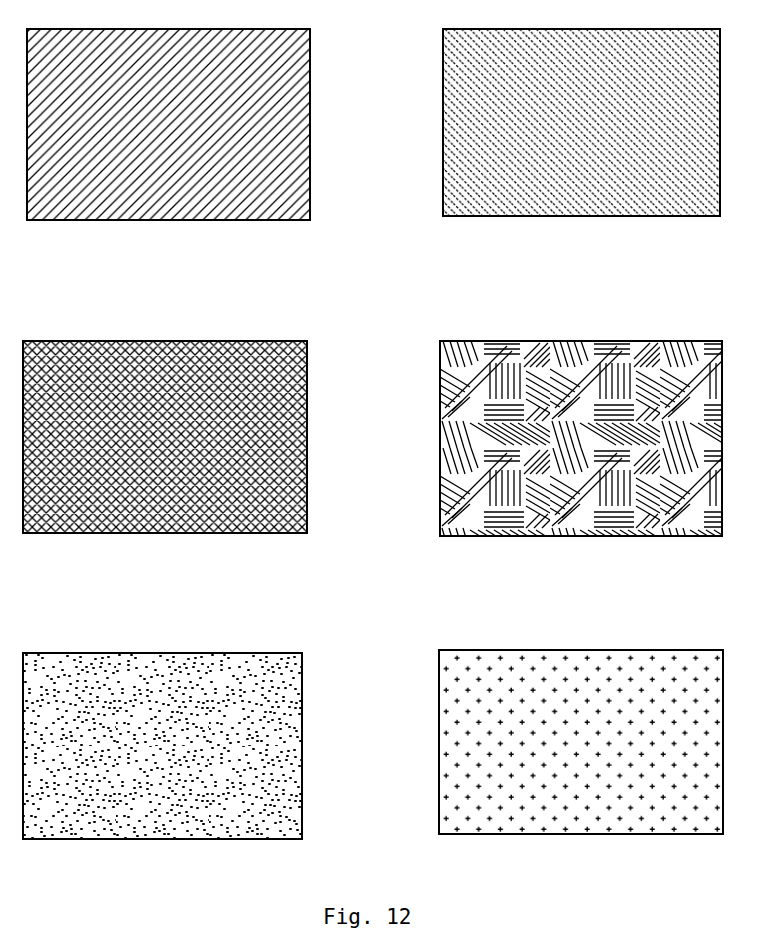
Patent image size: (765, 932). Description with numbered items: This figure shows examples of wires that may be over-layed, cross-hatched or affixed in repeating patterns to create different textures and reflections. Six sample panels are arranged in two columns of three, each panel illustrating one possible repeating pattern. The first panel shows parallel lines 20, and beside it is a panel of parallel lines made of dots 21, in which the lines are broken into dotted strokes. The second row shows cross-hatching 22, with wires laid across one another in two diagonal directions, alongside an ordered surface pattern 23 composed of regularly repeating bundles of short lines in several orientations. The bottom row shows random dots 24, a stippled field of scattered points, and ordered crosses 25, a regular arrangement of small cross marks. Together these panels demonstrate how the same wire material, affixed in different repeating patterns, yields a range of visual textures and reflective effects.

The parallel lines 20 is at (168, 137).
The parallel lines made of dots 21 is at (581, 135).
The cross-hatching 22 is at (165, 449).
The ordered surface pattern 23 is at (581, 450).
The random dots 24 is at (162, 758).
The ordered crosses 25 is at (581, 755).